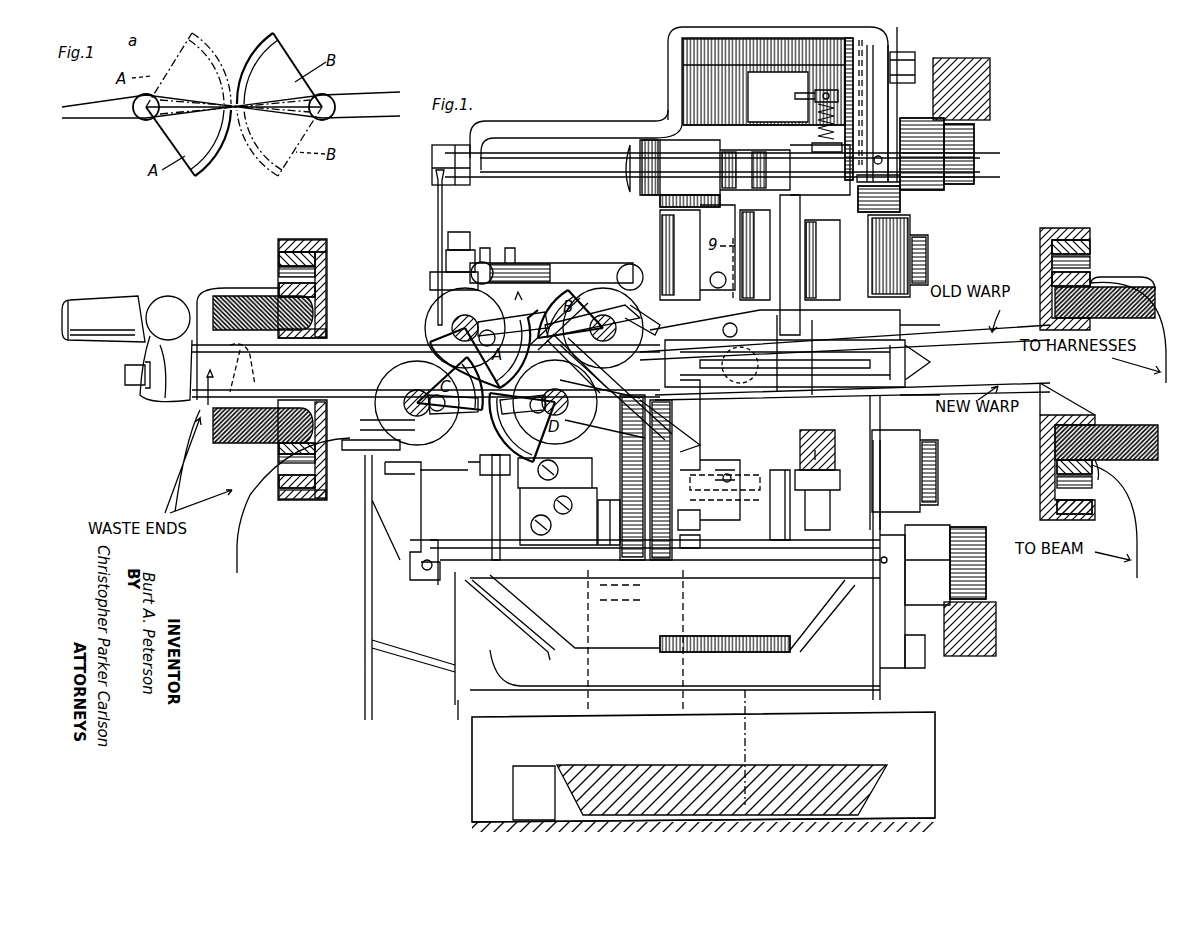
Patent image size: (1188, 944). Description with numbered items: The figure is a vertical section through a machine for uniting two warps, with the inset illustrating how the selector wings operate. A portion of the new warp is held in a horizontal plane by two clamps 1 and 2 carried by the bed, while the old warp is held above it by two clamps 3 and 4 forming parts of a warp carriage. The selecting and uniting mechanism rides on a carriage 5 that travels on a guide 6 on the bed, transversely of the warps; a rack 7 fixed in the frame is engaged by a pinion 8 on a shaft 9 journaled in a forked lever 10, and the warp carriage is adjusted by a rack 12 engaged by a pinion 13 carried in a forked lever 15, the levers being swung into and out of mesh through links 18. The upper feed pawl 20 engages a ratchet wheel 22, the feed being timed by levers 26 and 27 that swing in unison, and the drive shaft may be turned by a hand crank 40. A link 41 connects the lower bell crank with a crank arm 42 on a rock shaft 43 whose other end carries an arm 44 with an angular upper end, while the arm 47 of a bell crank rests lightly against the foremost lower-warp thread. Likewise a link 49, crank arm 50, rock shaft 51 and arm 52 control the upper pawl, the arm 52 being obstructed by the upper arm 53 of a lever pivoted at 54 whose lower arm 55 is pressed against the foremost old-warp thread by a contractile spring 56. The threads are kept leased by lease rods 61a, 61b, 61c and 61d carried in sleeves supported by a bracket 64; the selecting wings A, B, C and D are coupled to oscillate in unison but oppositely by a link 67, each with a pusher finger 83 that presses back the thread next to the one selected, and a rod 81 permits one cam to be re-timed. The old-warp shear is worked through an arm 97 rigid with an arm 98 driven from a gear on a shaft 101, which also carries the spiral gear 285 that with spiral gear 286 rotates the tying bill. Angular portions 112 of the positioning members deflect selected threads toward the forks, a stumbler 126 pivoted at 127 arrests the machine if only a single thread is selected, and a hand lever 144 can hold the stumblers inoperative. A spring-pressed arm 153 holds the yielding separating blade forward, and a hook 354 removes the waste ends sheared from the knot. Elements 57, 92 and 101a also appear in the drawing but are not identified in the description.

In FIG. 1, the clamp 1 is at (292, 500).
In FIG. 1, the clamp 2 is at (1050, 518).
In FIG. 1, the clamp 3 is at (295, 245).
In FIG. 1, the clamp 4 is at (1065, 232).
In FIG. 1, the carriage 5 is at (922, 730).
In FIG. 1, the guide 6 is at (858, 780).
In FIG. 1, the rack 7 is at (996, 624).
In FIG. 1, the pinion 8 is at (980, 530).
In FIG. 1, the shaft 9 is at (728, 743).
In FIG. 1, the forked lever 10 is at (932, 535).
In FIG. 1, the rack 12 is at (984, 80).
In FIG. 1, the pinion 13 is at (972, 142).
In FIG. 1, the forked lever 15 is at (695, 140).
In FIG. 1, the link 18 is at (790, 270).
In FIG. 1, the pawl 20 is at (862, 62).
In FIG. 1, the ratchet wheel 22 is at (898, 200).
In FIG. 1, the lever 26 is at (905, 462).
In FIG. 1, the lever 27 is at (928, 272).
In FIG. 1, the hand crank 40 is at (118, 310).
In FIG. 1, the link 41 is at (914, 658).
In FIG. 1, the crank arm 42 is at (896, 614).
In FIG. 1, the rock shaft 43 is at (740, 558).
In FIG. 1, the arm 44 is at (418, 514).
In FIG. 1, the arm 47 is at (372, 418).
In FIG. 1, the link 49 is at (905, 58).
In FIG. 1, the crank arm 50 is at (890, 101).
In FIG. 1, the rock shaft 51 is at (572, 162).
In FIG. 1, the arm 52 is at (460, 188).
In FIG. 1, the upper arm 53 is at (438, 212).
In FIG. 1, the pivot 54 is at (446, 256).
In FIG. 1, the lower arm 55 is at (440, 276).
In FIG. 1, the contractile spring 56 is at (447, 236).
In FIG. 1, the gear 57 is at (828, 210).
In FIG. 1A, the lease rod 61a is at (146, 120).
In FIG. 1, the lease rod 61a is at (455, 318).
In FIG. 1A, the lease rod 61b is at (325, 100).
In FIG. 1, the lease rod 61b is at (605, 312).
In FIG. 1, the lease rod 61c is at (416, 390).
In FIG. 1, the lease rod 61d is at (575, 440).
In FIG. 1, the bracket 64 is at (535, 285).
In FIG. 1, the link 67 is at (572, 270).
In FIG. 1, the rod 81 is at (130, 388).
In FIG. 1, the pusher finger 83 is at (497, 325).
In FIG. 1, the gear 92 is at (700, 518).
In FIG. 1, the arm 97 is at (492, 492).
In FIG. 1, the arm 98 is at (600, 578).
In FIG. 1, the shaft 101 is at (690, 496).
In FIG. 1, the slide 101a is at (680, 540).
In FIG. 1, the angular portion 112 is at (662, 392).
In FIG. 1, the stumbler 126 is at (490, 470).
In FIG. 1, the pivot 127 is at (600, 512).
In FIG. 1, the hand lever 144 is at (365, 580).
In FIG. 1, the spring-pressed arm 153 is at (815, 360).
In FIG. 1, the spiral gear 285 is at (815, 535).
In FIG. 1, the spiral gear 286 is at (830, 445).
In FIG. 1, the hook 354 is at (708, 265).